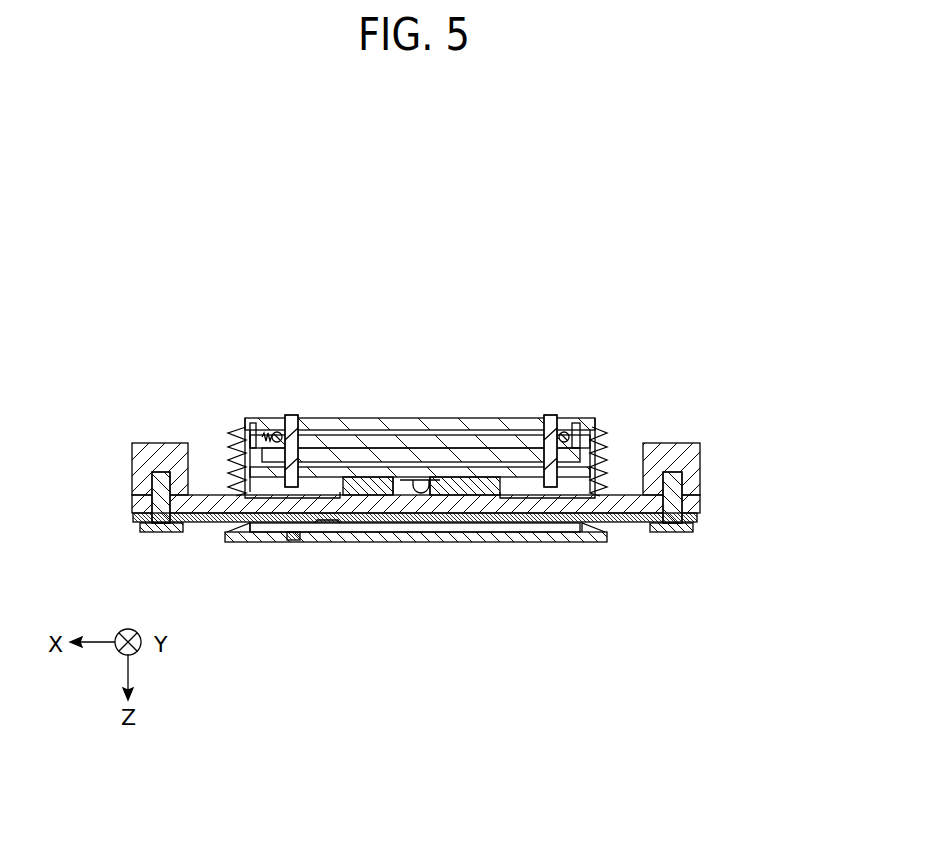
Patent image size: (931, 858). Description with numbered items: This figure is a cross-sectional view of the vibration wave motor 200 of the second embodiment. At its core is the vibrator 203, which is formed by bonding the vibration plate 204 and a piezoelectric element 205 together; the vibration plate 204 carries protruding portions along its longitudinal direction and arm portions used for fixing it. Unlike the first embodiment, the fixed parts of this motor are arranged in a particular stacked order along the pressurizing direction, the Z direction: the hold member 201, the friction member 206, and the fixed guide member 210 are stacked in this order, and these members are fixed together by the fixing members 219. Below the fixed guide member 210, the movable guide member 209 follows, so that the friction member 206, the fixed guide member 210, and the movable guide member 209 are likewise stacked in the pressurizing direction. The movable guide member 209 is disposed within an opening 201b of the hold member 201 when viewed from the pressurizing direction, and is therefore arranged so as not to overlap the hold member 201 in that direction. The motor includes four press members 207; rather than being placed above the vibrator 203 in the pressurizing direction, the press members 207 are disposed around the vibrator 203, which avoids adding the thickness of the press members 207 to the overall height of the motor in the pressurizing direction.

The vibration wave motor 200 is at (153, 358).
The hold member 201 is at (140, 452).
The opening 201b is at (637, 458).
The vibrator 203 is at (455, 419).
The vibration plate 204 is at (528, 470).
The piezoelectric element 205 is at (502, 463).
The friction member 206 is at (140, 508).
The press member 207 is at (228, 446).
The movable guide member 209 is at (405, 542).
The fixed guide member 210 is at (140, 522).
The fixing member 219 is at (142, 527).